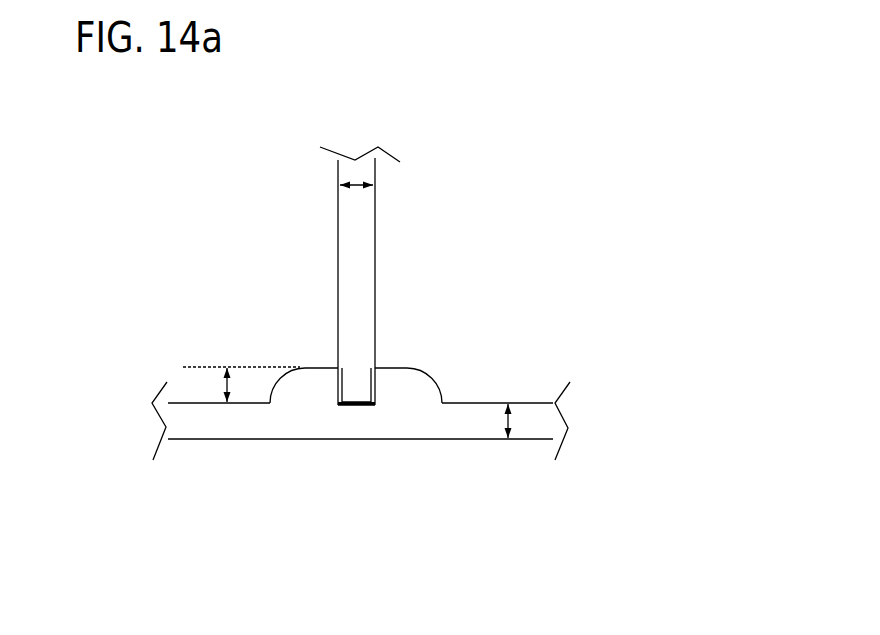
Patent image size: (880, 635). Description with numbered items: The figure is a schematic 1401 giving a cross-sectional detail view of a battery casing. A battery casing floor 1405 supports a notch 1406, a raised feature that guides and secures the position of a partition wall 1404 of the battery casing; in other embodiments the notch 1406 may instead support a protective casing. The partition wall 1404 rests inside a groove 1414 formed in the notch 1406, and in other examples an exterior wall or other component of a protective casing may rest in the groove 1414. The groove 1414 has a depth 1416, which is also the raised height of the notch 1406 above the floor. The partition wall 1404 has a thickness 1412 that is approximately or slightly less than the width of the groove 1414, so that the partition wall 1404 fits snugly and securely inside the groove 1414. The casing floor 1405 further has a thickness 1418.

The schematic 1401 is at (423, 85).
The partition wall 1404 is at (375, 228).
The battery casing floor 1405 is at (298, 442).
The notch 1406 is at (430, 372).
The thickness 1412 is at (357, 178).
The groove 1414 is at (359, 413).
The depth 1416 is at (222, 385).
The thickness 1418 is at (520, 420).